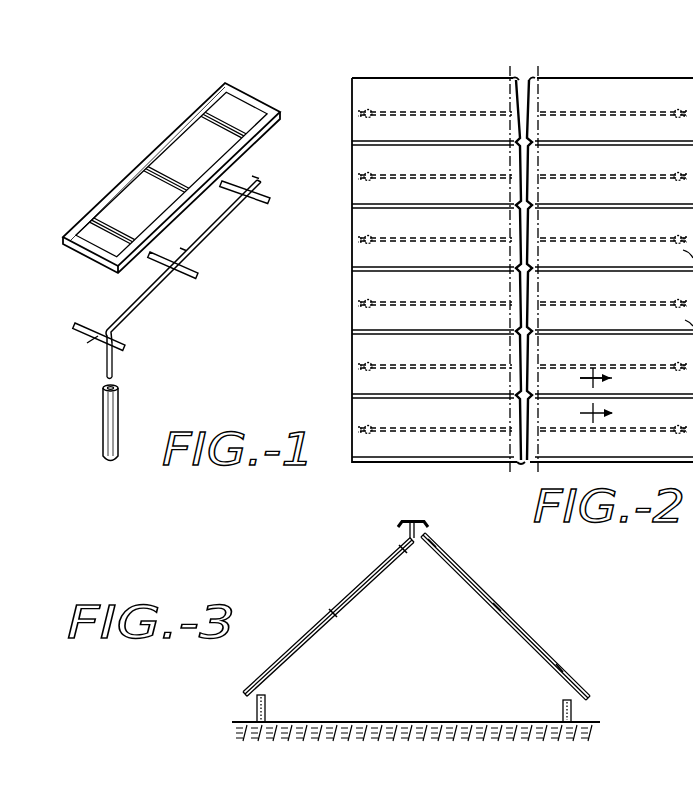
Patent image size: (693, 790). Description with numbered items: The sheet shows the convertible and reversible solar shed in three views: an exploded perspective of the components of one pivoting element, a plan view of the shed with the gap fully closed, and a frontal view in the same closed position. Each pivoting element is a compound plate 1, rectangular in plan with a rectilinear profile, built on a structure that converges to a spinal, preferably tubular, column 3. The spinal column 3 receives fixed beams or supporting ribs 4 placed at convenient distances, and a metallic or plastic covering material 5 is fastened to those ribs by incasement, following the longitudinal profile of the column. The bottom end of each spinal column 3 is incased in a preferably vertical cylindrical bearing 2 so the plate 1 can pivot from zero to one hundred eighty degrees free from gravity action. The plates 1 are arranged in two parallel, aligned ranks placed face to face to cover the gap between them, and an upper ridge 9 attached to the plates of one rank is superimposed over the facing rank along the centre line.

In FIG. 1, the compound plate 1 is at (170, 116).
In FIG. 2, the compound plate 1 is at (343, 131).
In FIG. 3, the compound plate 1 is at (327, 597).
In FIG. 1, the cylindrical bearing 2 is at (120, 412).
In FIG. 2, the cylindrical bearing 2 is at (368, 304).
In FIG. 3, the cylindrical bearing 2 is at (270, 706).
In FIG. 1, the spinal column 3 is at (212, 237).
In FIG. 3, the spinal column 3 is at (308, 646).
In FIG. 1, the supporting rib 4 is at (271, 200).
In FIG. 3, the supporting rib 4 is at (334, 617).
In FIG. 1, the covering material 5 is at (137, 188).
In FIG. 3, the covering material 5 is at (292, 643).
In FIG. 2, the upper ridge 9 is at (516, 462).
In FIG. 3, the upper ridge 9 is at (398, 518).